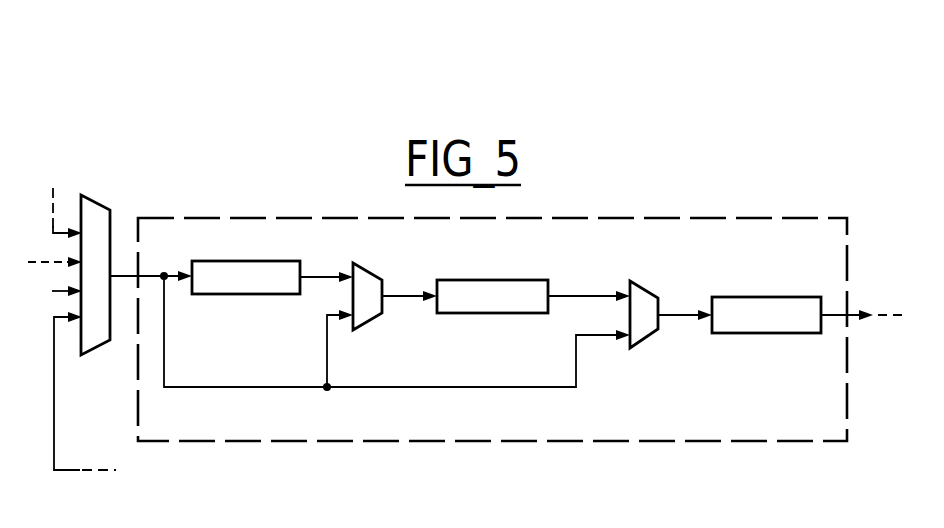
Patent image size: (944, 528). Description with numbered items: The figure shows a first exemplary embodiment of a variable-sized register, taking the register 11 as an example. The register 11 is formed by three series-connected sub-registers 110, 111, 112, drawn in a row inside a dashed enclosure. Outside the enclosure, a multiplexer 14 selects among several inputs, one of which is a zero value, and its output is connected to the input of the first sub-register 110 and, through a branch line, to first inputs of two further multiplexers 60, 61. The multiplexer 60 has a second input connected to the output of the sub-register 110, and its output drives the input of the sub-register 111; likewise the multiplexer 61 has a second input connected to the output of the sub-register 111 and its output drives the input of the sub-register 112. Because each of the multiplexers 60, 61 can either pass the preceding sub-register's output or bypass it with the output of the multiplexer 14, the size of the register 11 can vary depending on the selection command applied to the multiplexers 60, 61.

The register 11 is at (718, 442).
The multiplexer 14 is at (92, 201).
The sub-register 110 is at (254, 286).
The multiplexer 60 is at (373, 275).
The sub-register 111 is at (501, 305).
The multiplexer 61 is at (645, 290).
The sub-register 112 is at (778, 324).